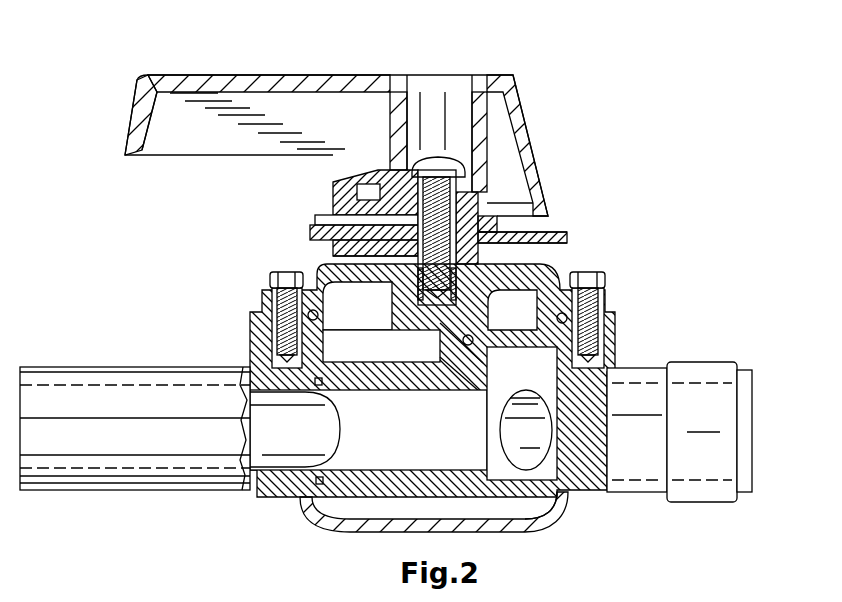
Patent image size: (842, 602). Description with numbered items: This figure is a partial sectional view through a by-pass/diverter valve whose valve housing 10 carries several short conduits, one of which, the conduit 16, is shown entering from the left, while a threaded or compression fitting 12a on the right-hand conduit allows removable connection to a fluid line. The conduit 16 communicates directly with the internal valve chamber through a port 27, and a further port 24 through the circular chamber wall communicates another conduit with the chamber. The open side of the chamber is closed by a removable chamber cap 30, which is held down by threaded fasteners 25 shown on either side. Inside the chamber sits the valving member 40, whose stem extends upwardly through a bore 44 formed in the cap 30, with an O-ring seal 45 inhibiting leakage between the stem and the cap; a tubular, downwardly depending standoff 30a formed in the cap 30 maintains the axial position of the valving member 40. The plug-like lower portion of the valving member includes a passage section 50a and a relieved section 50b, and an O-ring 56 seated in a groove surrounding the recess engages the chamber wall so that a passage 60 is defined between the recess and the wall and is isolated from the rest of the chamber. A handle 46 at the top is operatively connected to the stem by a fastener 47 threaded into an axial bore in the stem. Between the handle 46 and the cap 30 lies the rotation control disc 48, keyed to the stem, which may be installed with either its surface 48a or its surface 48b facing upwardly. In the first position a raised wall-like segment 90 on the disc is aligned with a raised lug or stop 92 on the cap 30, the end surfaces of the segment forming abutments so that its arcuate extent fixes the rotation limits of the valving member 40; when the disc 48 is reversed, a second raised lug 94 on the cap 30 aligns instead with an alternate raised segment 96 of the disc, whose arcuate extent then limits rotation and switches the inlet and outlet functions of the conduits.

The valve housing 10 is at (392, 298).
The threaded or compression fitting 12a is at (707, 375).
The conduit 16 is at (213, 398).
The port 24 is at (537, 492).
The threaded fasteners 25 is at (273, 276).
The port 27 is at (407, 447).
The chamber cap 30 is at (457, 365).
The standoff 30a is at (388, 305).
The valving member 40 is at (500, 317).
The bore 44 is at (466, 360).
The O-ring seal 45 is at (466, 371).
The handle 46 is at (233, 82).
The fastener 47 is at (437, 160).
The rotation control disc 48 is at (573, 237).
The disc surface 48a is at (562, 233).
The disc surface 48b is at (563, 245).
The passage section 50a is at (347, 503).
The relieved section 50b is at (553, 525).
The O-ring 56 is at (317, 482).
The passage 60 is at (433, 441).
The raised wall-like segment 90 is at (378, 198).
The raised lug or stop 92 is at (335, 258).
The second raised lug 94 is at (500, 203).
The raised wall-like segment 96 is at (390, 261).